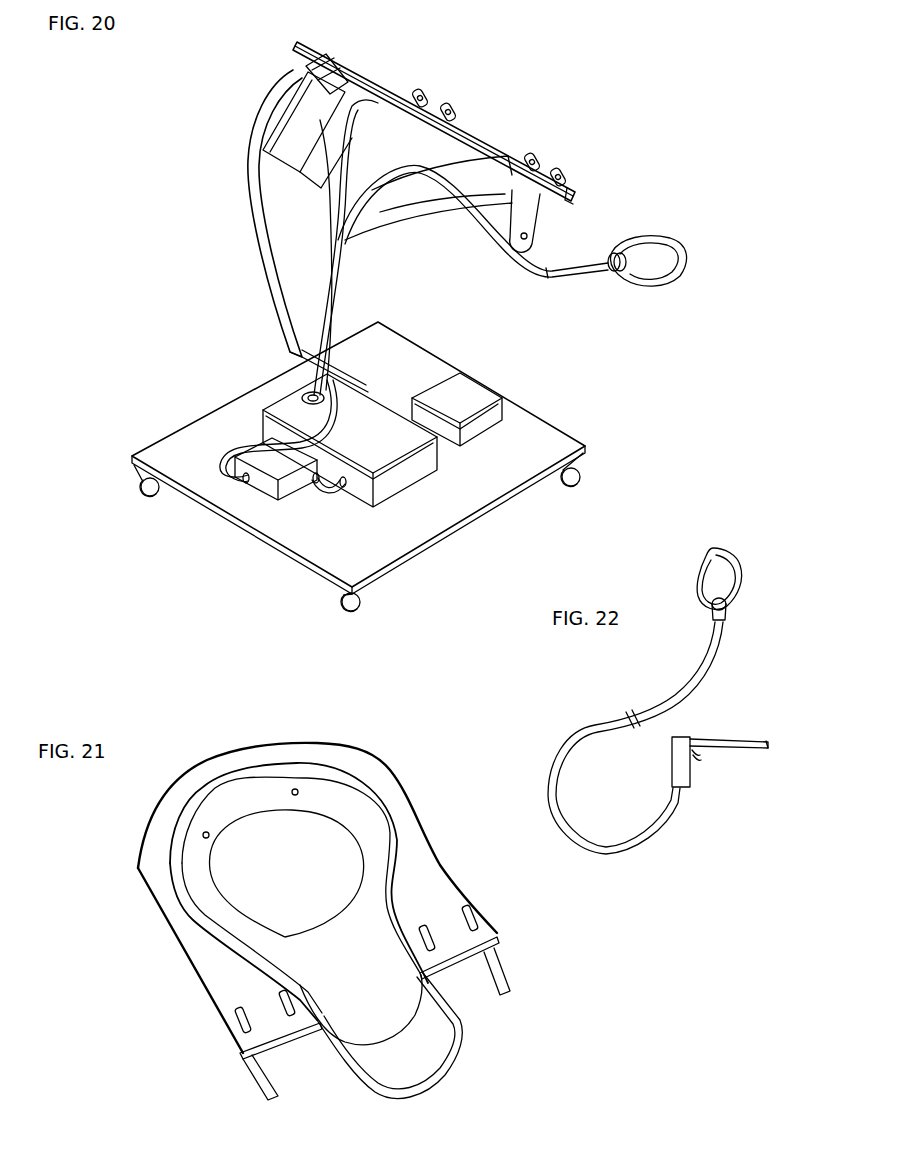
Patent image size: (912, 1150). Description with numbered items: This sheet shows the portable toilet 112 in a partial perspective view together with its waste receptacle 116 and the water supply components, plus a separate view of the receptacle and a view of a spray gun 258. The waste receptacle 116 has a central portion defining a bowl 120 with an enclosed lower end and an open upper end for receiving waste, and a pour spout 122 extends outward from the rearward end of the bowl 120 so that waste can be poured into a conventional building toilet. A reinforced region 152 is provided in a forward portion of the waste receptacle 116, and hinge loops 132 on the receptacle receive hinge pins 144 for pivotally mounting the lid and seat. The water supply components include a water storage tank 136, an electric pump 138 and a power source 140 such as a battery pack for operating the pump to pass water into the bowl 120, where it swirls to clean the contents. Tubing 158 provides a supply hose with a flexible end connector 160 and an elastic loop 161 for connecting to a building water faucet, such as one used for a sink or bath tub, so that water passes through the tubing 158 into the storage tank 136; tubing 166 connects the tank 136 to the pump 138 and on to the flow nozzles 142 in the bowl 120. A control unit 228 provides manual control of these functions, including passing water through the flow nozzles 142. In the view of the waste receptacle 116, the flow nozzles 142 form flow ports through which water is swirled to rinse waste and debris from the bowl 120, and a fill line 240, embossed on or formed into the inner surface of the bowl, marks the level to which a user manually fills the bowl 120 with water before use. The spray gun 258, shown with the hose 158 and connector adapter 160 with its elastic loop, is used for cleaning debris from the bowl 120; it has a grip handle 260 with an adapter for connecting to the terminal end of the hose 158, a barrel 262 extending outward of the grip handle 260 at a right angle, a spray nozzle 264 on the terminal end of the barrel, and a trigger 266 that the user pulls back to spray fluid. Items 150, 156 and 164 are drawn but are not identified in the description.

In FIG. 20, the portable toilet 112 is at (190, 99).
In FIG. 20, the waste receptacle 116 is at (255, 85).
In FIG. 21, the waste receptacle 116 is at (118, 886).
In FIG. 20, the bowl 120 is at (342, 58).
In FIG. 21, the bowl 120 is at (342, 865).
In FIG. 21, the pour spout 122 is at (440, 1072).
In FIG. 20, the hinge loops 132 is at (425, 90).
In FIG. 21, the hinge loops 132 is at (430, 927).
In FIG. 20, the water storage tank 136 is at (358, 392).
In FIG. 20, the electric pump 138 is at (244, 501).
In FIG. 20, the power source 140 is at (265, 488).
In FIG. 21, the flow nozzles 142 is at (296, 788).
In FIG. 20, the hinge pins 144 is at (533, 234).
In FIG. 21, the hinge pins 144 is at (262, 1098).
In FIG. 20, the clamp 150 is at (303, 68).
In FIG. 20, the reinforced region 152 is at (392, 228).
In FIG. 20, the cables 156 is at (250, 226).
In FIG. 20, the tubing 158 is at (545, 280).
In FIG. 22, the tubing 158 is at (666, 700).
In FIG. 20, the flexible end connector 160 is at (616, 272).
In FIG. 22, the flexible end connector 160 is at (720, 615).
In FIG. 20, the elastic loop 161 is at (660, 270).
In FIG. 22, the elastic loop 161 is at (732, 560).
In FIG. 20, the base plate 164 is at (530, 425).
In FIG. 20, the tubing 166 is at (143, 492).
In FIG. 20, the control unit 228 is at (456, 383).
In FIG. 21, the fill line 240 is at (222, 905).
In FIG. 22, the spray gun 258 is at (708, 778).
In FIG. 22, the grip handle 260 is at (676, 765).
In FIG. 22, the barrel 262 is at (734, 740).
In FIG. 22, the spray nozzle 264 is at (768, 742).
In FIG. 22, the trigger 266 is at (700, 755).